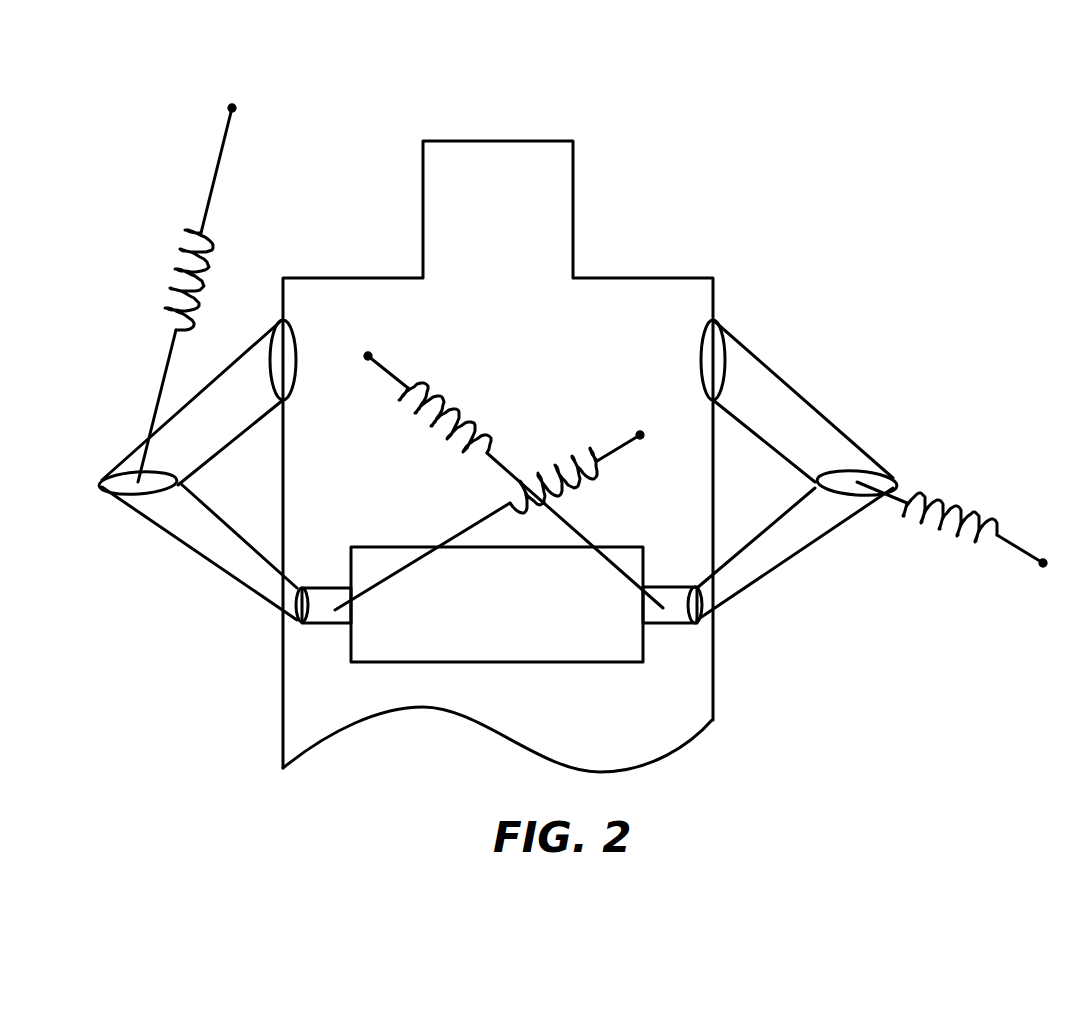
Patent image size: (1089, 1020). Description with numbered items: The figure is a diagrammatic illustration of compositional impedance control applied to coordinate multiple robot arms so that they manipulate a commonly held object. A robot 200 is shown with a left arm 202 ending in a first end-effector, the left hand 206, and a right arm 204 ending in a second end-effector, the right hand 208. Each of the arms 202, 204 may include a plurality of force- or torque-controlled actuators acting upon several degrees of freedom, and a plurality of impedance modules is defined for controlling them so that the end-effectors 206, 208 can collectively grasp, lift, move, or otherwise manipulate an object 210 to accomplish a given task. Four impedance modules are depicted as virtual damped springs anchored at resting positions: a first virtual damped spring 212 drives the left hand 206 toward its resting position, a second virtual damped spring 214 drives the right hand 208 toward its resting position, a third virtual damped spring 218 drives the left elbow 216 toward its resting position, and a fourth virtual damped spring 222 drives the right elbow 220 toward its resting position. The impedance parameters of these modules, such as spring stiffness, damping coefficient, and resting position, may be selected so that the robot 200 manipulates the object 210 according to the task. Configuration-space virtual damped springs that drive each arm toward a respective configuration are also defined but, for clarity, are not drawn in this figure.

The robot 200 is at (778, 141).
The left arm 202 is at (831, 482).
The right arm 204 is at (163, 481).
The left hand 206 is at (675, 612).
The right hand 208 is at (322, 613).
The object 210 is at (518, 618).
The first virtual damped spring 212 is at (440, 427).
The second virtual damped spring 214 is at (570, 487).
The left elbow 216 is at (870, 482).
The third virtual damped spring 218 is at (968, 510).
The right elbow 220 is at (125, 480).
The fourth virtual damped spring 222 is at (175, 272).